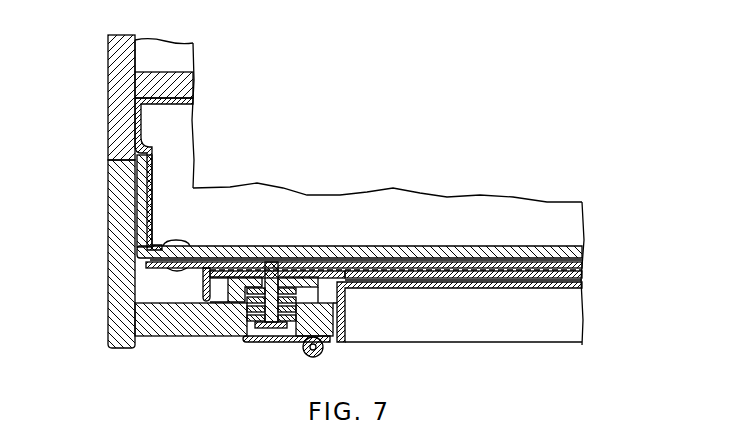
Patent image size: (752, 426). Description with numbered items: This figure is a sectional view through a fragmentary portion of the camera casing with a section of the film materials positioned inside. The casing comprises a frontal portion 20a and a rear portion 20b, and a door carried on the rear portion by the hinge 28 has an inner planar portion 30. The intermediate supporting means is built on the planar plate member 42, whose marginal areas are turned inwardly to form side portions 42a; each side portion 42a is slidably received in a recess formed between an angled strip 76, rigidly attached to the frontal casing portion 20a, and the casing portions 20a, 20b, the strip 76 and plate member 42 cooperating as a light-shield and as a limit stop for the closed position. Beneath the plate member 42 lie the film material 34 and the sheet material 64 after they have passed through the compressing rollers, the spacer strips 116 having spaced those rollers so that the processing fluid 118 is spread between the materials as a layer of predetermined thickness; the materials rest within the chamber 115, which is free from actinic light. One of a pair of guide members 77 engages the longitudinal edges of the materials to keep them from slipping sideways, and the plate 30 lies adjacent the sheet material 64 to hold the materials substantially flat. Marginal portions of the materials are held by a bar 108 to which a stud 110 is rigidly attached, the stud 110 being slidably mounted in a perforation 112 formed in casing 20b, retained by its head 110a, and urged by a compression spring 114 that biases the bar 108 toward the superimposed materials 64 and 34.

The frontal casing portion 20a is at (118, 82).
The rear casing portion 20b is at (120, 260).
The angled strip 76 is at (160, 157).
The side portion 42a is at (137, 179).
The planar plate member 42 is at (565, 253).
The spacer strip 116 is at (343, 267).
The photosensitive film material 34 is at (260, 267).
The processing fluid 118 is at (443, 268).
The sheet material 64 is at (500, 275).
The chamber 115 is at (590, 279).
The compression spring 114 is at (345, 303).
The inner planar portion 30 is at (562, 287).
The guide member 77 is at (203, 286).
The bar 108 is at (226, 282).
The stud 110 is at (290, 267).
The head 110a is at (260, 342).
The perforation 112 is at (272, 340).
The hinge 28 is at (318, 358).